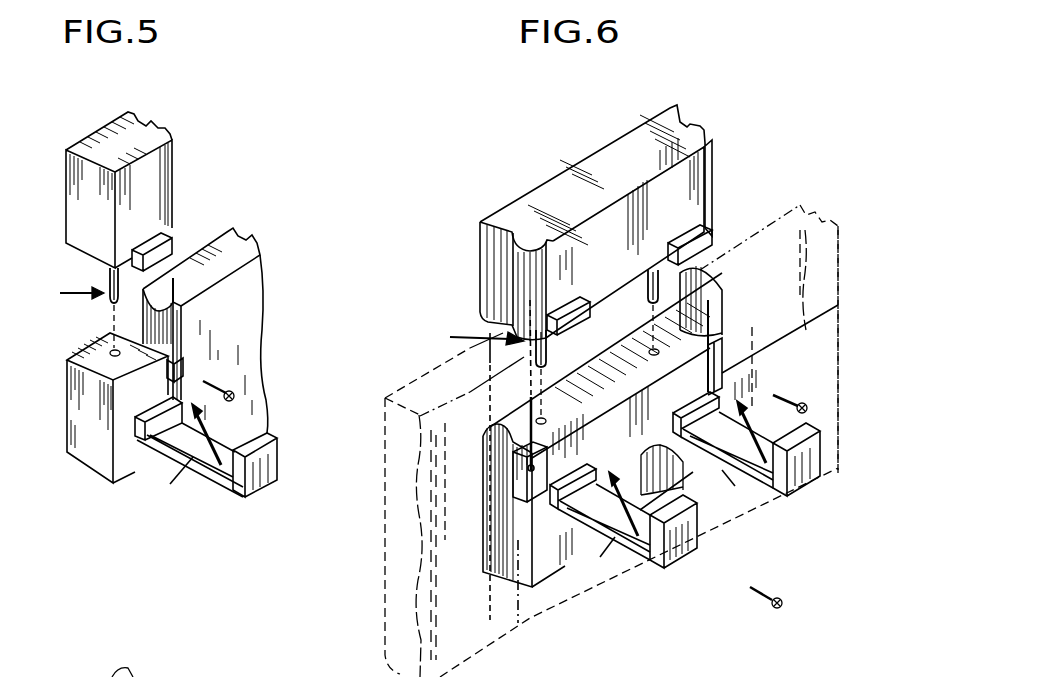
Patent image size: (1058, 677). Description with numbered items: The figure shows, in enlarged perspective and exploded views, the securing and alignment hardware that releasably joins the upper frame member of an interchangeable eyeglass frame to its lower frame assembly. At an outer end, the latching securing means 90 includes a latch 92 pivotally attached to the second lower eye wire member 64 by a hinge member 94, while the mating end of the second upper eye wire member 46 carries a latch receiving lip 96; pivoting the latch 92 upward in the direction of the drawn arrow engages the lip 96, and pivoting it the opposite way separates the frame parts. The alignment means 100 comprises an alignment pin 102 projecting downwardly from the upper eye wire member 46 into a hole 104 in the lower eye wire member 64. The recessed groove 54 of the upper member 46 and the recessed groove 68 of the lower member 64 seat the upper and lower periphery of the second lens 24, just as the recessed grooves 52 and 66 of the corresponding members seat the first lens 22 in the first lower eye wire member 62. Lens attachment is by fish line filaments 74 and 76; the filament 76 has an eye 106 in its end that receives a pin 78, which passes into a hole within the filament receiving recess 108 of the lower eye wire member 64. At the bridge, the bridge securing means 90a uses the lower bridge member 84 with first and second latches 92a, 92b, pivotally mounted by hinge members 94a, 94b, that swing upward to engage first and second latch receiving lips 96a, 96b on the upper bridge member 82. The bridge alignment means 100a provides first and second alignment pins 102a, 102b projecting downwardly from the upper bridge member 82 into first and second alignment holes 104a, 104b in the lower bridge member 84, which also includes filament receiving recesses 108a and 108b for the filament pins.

In FIG. 6, the first lens 22 is at (840, 222).
In FIG. 5, the second lens 24 is at (173, 293).
In FIG. 6, the second lens 24 is at (420, 478).
In FIG. 5, the second upper eye wire member 46 is at (90, 213).
In FIG. 6, the recessed groove 52 is at (586, 385).
In FIG. 6, the recessed groove 54 is at (500, 272).
In FIG. 6, the first lower eye wire member 62 is at (693, 472).
In FIG. 5, the second lower eye wire member 64 is at (97, 418).
In FIG. 6, the second lower eye wire member 64 is at (532, 459).
In FIG. 6, the recessed groove 66 is at (683, 335).
In FIG. 5, the recessed groove 68 is at (143, 310).
In FIG. 6, the recessed groove 68 is at (507, 542).
In FIG. 6, the first fish line filament 74 is at (786, 320).
In FIG. 5, the second fish line filament 76 is at (176, 292).
In FIG. 6, the second fish line filament 76 is at (530, 425).
In FIG. 5, the pin 78 is at (234, 388).
In FIG. 6, the pin 78 is at (800, 400).
In FIG. 6, the upper bridge member 82 is at (557, 198).
In FIG. 6, the lower bridge member 84 is at (642, 363).
In FIG. 5, the latching securing means 90 is at (205, 463).
In FIG. 6, the bridge securing means 90a is at (628, 545).
In FIG. 5, the latch 92 is at (279, 452).
In FIG. 6, the first latch 92a is at (807, 468).
In FIG. 6, the second latch 92b is at (685, 545).
In FIG. 5, the hinge member 94 is at (100, 462).
In FIG. 6, the hinge member 94a is at (723, 378).
In FIG. 6, the hinge member 94b is at (562, 565).
In FIG. 5, the lip 96 is at (172, 243).
In FIG. 6, the first latch receiving lip 96a is at (717, 237).
In FIG. 6, the second latch receiving lip 96b is at (552, 315).
In FIG. 5, the alignment means 100 is at (65, 293).
In FIG. 6, the bridge alignment means 100a is at (465, 336).
In FIG. 5, the alignment pin 102 is at (110, 279).
In FIG. 6, the first alignment pin 102a is at (648, 296).
In FIG. 6, the second alignment pin 102b is at (547, 353).
In FIG. 5, the hole 104 is at (108, 352).
In FIG. 6, the first alignment hole 104a is at (658, 350).
In FIG. 6, the second alignment hole 104b is at (545, 418).
In FIG. 5, the eye 106 is at (178, 368).
In FIG. 5, the filament receiving recess 108 is at (168, 397).
In FIG. 6, the filament receiving recess 108a is at (722, 362).
In FIG. 6, the filament receiving recess 108b is at (540, 470).